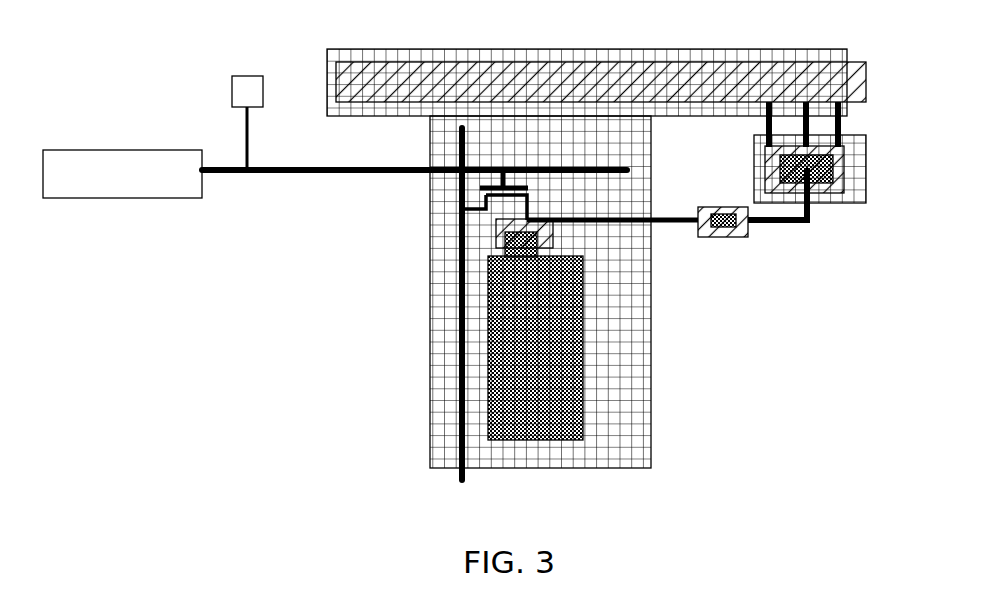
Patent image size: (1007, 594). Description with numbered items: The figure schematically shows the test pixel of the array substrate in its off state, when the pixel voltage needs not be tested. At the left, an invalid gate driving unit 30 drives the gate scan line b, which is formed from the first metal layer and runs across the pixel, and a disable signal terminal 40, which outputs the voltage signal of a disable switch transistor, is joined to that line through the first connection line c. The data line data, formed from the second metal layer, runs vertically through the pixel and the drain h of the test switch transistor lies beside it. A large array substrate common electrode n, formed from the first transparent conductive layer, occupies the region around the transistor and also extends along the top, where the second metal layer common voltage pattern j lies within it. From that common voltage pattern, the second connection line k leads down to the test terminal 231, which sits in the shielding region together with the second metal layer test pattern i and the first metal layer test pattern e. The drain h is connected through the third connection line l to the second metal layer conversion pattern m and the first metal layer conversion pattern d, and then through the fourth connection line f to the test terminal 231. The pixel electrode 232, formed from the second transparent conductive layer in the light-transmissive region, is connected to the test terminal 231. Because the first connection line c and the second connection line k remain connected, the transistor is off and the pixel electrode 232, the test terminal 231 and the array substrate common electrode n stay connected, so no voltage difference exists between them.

The invalid gate driving unit 30 is at (122, 174).
The disable signal terminal 40 is at (247, 91).
The array substrate common electrode n is at (617, 53).
The second metal layer common voltage pattern j is at (865, 78).
The second connection line k is at (842, 125).
The test terminal 231 is at (863, 141).
The second metal layer test pattern i is at (840, 188).
The first metal layer test pattern e is at (823, 178).
The fourth connection line f is at (780, 223).
The second metal layer conversion pattern m is at (743, 207).
The first metal layer conversion pattern d is at (722, 237).
The third connection line l is at (657, 218).
The drain h is at (500, 230).
The pixel electrode 232 is at (540, 433).
The data line data is at (462, 320).
The gate scan line b is at (343, 174).
The first connection line c is at (245, 156).